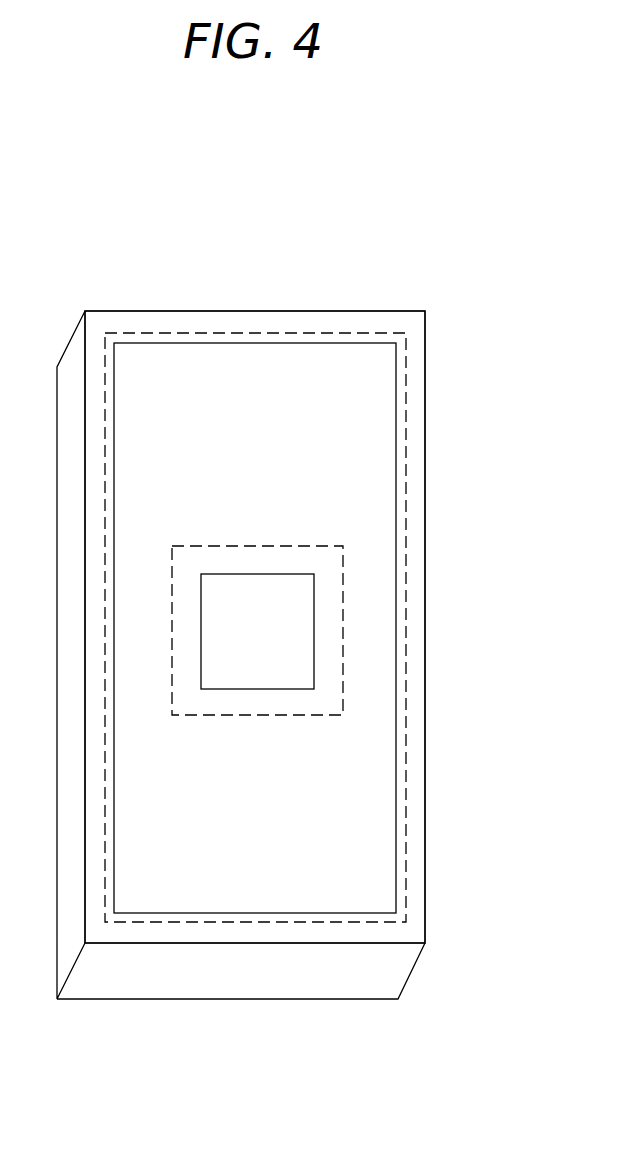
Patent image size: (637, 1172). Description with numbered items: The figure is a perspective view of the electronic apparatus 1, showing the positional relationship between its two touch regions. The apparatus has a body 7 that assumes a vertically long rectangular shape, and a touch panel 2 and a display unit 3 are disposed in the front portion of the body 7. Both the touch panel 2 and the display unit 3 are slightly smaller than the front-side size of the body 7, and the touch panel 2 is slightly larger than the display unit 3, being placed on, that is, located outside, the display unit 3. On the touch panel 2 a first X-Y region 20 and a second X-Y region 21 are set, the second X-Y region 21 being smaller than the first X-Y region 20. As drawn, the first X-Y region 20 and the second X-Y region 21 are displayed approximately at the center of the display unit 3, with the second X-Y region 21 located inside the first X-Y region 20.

The electronic apparatus 1 is at (218, 311).
The body 7 is at (424, 358).
The touch panel 2 is at (406, 422).
The display unit 3 is at (396, 500).
The first X-Y region 20 is at (342, 568).
The second X-Y region 21 is at (314, 636).